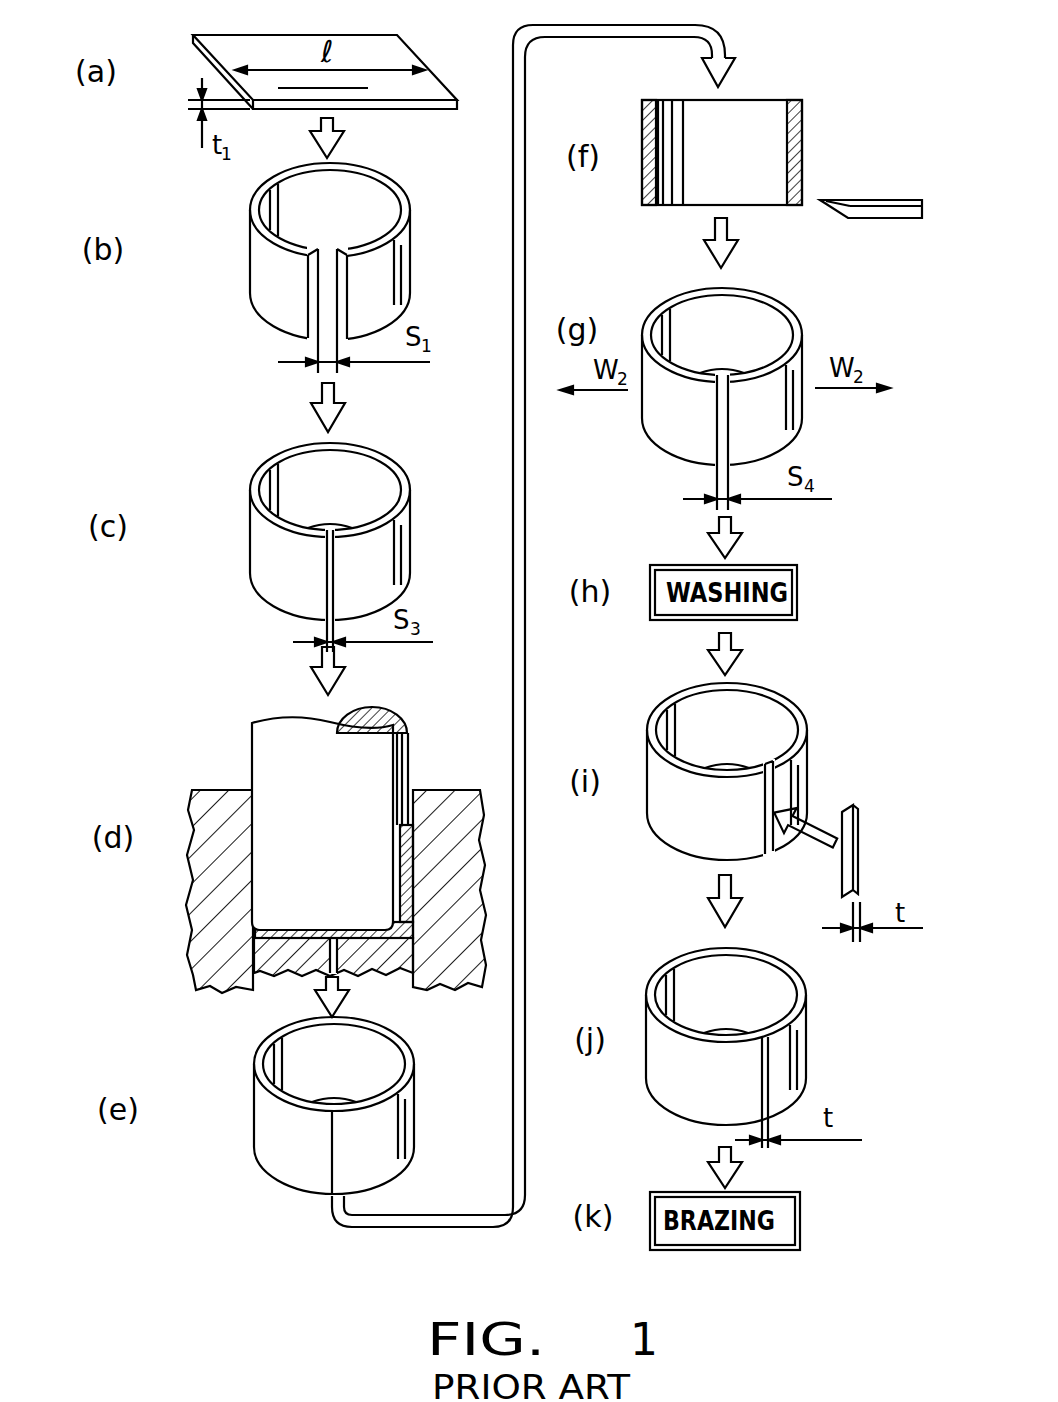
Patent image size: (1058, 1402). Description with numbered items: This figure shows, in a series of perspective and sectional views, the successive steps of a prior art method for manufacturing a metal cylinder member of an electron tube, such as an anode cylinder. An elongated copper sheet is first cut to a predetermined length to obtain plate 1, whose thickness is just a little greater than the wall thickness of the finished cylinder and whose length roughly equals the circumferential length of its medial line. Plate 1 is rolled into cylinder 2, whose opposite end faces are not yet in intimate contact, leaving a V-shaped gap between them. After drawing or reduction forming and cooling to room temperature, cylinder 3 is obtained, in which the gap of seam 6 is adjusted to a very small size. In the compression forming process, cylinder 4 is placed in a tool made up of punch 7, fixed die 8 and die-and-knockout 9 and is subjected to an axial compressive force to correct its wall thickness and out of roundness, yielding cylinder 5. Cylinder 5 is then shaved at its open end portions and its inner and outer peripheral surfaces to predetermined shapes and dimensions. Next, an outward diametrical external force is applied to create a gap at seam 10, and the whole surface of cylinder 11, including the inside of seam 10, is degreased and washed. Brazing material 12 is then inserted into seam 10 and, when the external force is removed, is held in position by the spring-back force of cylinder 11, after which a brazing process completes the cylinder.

The plate 1 is at (393, 50).
The cylinder 2 is at (400, 260).
The cylinder 3 is at (358, 547).
The cylinder 4 is at (407, 853).
The cylinder 5 is at (410, 1110).
The seam 6 is at (330, 568).
The punch 7 is at (270, 752).
The fixed die 8 is at (202, 943).
The die-and-knockout 9 is at (282, 967).
The seam 10 is at (725, 413).
The cylinder 11 is at (697, 719).
The brazing material 12 is at (853, 812).